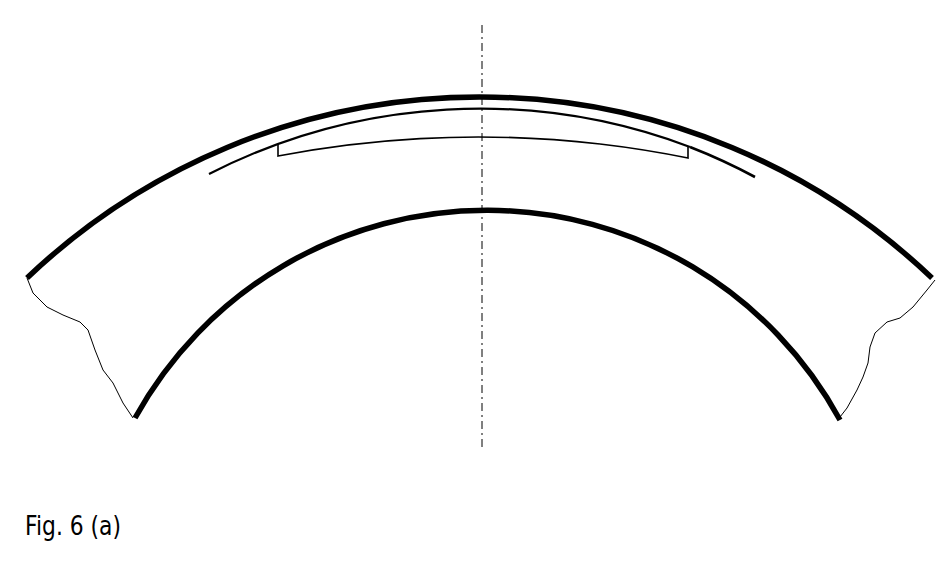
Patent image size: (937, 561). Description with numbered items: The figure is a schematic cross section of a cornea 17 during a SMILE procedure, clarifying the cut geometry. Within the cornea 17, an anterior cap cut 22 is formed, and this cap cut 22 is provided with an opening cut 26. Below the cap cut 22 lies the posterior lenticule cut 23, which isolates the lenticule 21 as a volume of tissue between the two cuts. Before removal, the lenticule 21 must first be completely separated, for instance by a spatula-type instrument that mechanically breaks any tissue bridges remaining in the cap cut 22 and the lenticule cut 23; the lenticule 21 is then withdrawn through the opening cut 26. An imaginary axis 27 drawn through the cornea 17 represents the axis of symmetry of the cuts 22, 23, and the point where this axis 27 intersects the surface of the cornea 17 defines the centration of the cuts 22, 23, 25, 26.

The cornea 17 is at (190, 251).
The lenticule 21 is at (350, 136).
The anterior cap cut 22 is at (493, 113).
The posterior lenticule cut 23 is at (492, 137).
The cut 25 is at (693, 160).
The opening cut 26 is at (756, 177).
The axis 27 is at (482, 275).